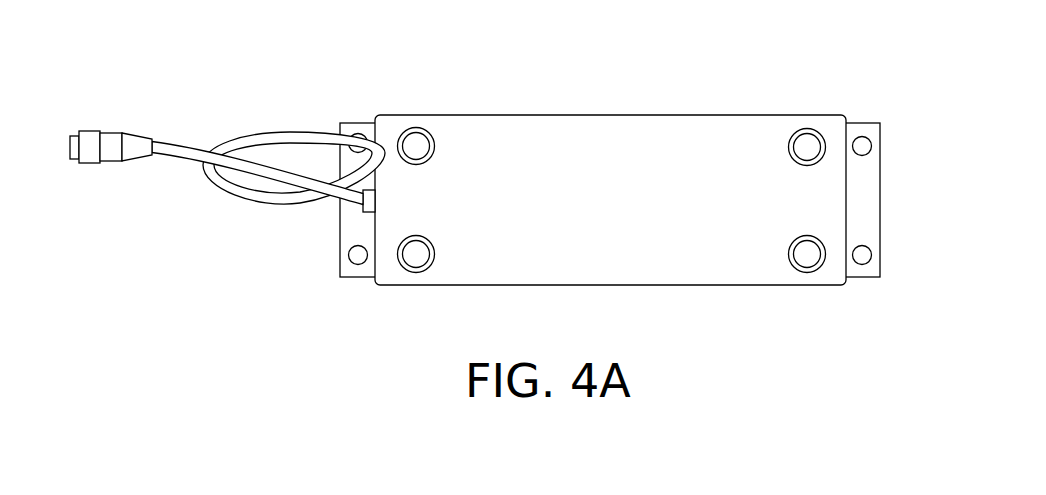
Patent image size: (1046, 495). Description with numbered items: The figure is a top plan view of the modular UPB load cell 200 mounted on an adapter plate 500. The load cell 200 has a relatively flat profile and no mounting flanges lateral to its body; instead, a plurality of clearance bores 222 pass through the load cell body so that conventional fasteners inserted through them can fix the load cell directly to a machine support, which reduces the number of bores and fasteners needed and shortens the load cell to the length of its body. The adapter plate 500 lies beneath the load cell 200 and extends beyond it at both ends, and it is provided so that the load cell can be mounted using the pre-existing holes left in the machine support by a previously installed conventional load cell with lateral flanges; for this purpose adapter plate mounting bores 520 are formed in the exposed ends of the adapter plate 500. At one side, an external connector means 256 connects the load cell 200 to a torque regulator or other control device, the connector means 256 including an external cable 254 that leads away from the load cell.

The modular UPB load cell 200 is at (624, 143).
The clearance bore 222 is at (417, 147).
The external cable 254 is at (214, 178).
The external connector means 256 is at (370, 201).
The adapter plate 500 is at (863, 197).
The adapter plate mounting bore 520 is at (358, 257).